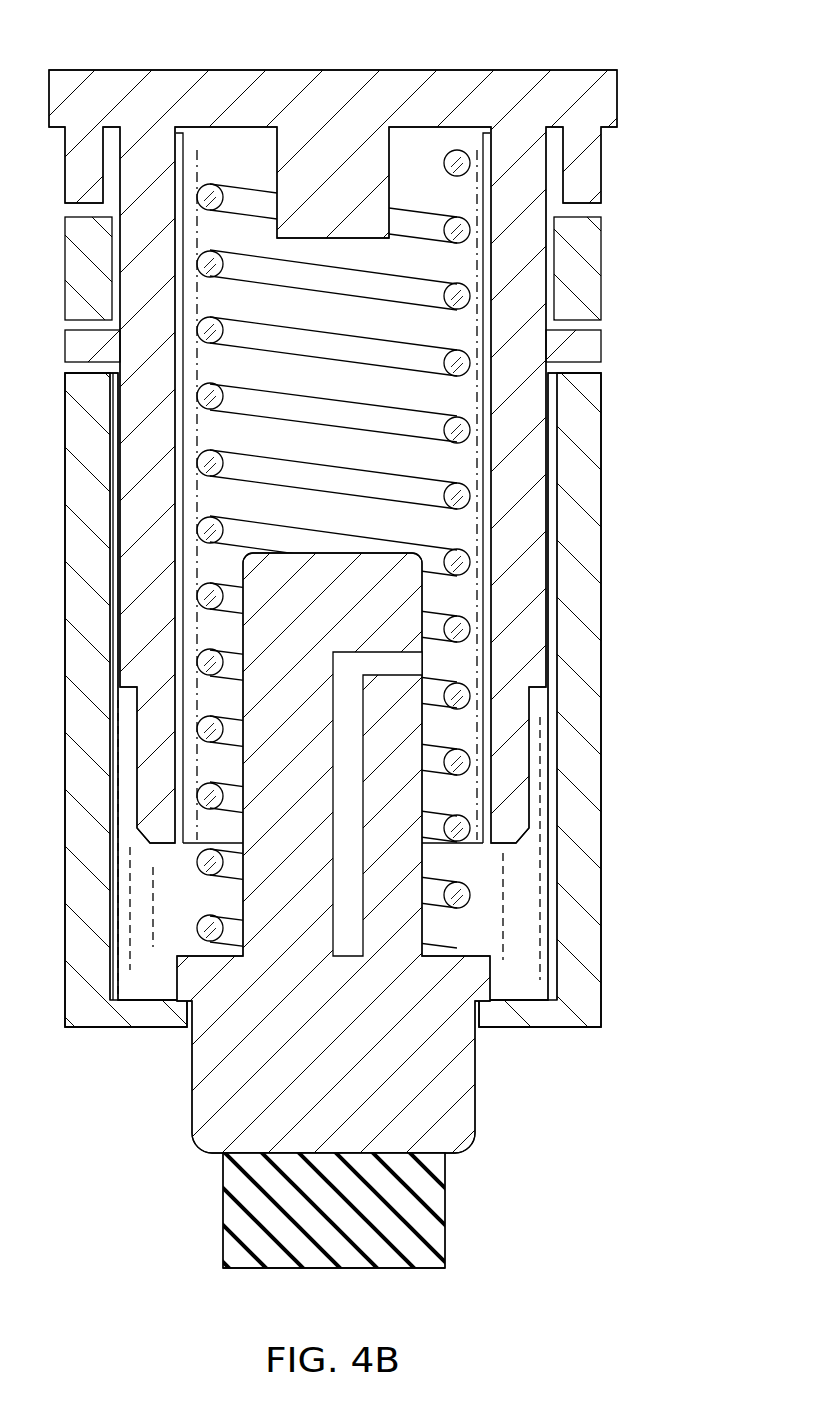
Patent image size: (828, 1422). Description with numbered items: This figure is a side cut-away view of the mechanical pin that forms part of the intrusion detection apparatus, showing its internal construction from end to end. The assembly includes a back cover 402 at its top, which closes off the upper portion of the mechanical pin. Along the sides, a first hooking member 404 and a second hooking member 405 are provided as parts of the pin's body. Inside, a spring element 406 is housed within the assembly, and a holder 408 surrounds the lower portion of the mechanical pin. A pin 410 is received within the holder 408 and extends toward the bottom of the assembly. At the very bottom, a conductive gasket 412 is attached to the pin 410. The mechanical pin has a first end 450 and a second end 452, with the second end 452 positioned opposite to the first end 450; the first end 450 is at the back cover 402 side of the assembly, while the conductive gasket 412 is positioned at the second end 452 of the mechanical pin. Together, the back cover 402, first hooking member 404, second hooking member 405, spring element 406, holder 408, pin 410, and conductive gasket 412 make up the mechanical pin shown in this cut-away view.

The first end 450 is at (212, 58).
The back cover 402 is at (630, 92).
The first hooking member 404 is at (614, 165).
The second hooking member 405 is at (614, 262).
The spring element 406 is at (482, 433).
The holder 408 is at (614, 670).
The pin 410 is at (487, 1072).
The conductive gasket 412 is at (455, 1208).
The second end 452 is at (266, 1284).